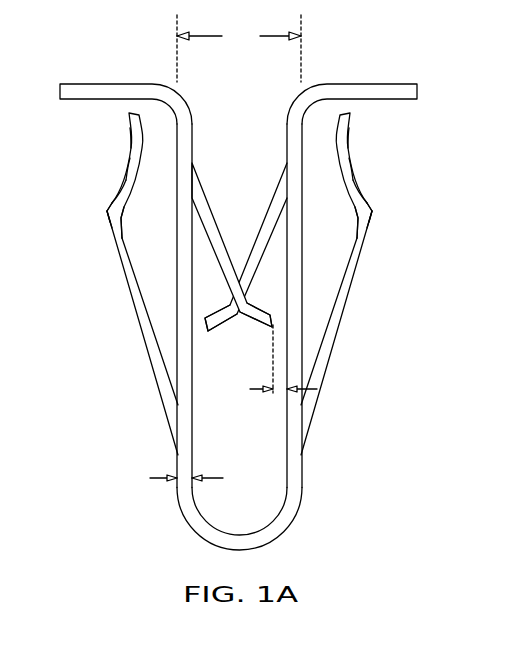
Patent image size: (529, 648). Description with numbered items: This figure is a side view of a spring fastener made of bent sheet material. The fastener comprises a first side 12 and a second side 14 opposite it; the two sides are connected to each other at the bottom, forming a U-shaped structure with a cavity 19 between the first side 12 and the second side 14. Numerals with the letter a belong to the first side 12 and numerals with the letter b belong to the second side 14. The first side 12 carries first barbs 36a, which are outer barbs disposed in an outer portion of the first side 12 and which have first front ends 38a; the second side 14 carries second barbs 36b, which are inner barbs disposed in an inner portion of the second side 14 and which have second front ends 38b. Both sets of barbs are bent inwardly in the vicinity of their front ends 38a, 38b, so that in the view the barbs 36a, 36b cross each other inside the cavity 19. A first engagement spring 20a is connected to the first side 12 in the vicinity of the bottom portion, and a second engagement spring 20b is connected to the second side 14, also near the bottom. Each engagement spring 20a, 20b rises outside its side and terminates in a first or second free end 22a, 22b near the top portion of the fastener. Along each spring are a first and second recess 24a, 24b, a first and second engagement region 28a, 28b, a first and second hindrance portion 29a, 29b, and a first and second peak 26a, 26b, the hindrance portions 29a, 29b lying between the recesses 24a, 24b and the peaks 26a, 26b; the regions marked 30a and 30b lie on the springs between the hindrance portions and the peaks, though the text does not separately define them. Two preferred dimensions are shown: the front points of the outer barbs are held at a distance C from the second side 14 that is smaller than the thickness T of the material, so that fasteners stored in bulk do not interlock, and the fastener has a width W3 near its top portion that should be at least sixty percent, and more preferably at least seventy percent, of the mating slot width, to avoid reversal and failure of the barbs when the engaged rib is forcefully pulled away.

The first side 12 is at (184, 315).
The second side 14 is at (295, 322).
The cavity 19 is at (234, 127).
The first engagement spring 20a is at (133, 318).
The second engagement spring 20b is at (352, 295).
The first free end 22a is at (129, 112).
The second free end 22b is at (346, 112).
The first recess 24a is at (129, 134).
The second recess 24b is at (349, 140).
The first peak 26a is at (104, 218).
The second peak 26b is at (378, 224).
The first engagement region 28a is at (127, 166).
The second engagement region 28b is at (354, 165).
The first hindrance portion 29a is at (118, 190).
The second hindrance portion 29b is at (363, 190).
The first bend 30a is at (107, 203).
The second bend 30b is at (375, 212).
The first barbs 36a is at (213, 230).
The second barbs 36b is at (258, 245).
The first front ends 38a is at (275, 322).
The second front ends 38b is at (207, 332).
The width W3 is at (239, 48).
The distance C is at (250, 390).
The thickness T is at (157, 478).